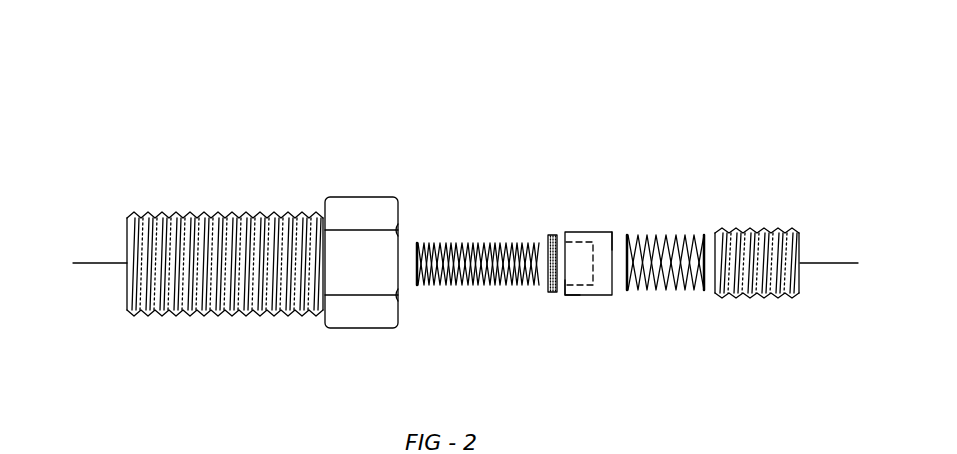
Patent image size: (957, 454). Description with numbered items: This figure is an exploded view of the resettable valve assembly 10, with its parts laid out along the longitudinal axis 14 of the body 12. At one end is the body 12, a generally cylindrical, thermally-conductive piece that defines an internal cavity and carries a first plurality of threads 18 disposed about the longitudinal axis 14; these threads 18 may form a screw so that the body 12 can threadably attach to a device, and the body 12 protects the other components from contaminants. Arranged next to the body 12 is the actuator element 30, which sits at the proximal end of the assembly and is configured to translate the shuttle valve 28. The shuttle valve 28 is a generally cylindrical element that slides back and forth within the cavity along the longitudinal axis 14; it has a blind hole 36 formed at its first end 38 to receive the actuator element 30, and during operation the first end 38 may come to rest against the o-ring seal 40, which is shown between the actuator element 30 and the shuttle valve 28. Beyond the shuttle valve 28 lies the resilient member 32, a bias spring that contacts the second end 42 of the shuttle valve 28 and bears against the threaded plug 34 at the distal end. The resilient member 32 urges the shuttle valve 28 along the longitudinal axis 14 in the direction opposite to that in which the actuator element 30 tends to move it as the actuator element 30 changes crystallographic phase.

The resettable valve assembly 10 is at (715, 91).
The body 12 is at (354, 206).
The longitudinal axis 14 is at (818, 266).
The first plurality of threads 18 is at (181, 213).
The shuttle valve 28 is at (595, 232).
The actuator element 30 is at (503, 242).
The resilient member 32 is at (680, 238).
The threaded plug 34 is at (768, 230).
The blind hole 36 is at (585, 287).
The first end 38 is at (565, 295).
The o-ring seal 40 is at (553, 236).
The second end 42 is at (614, 238).